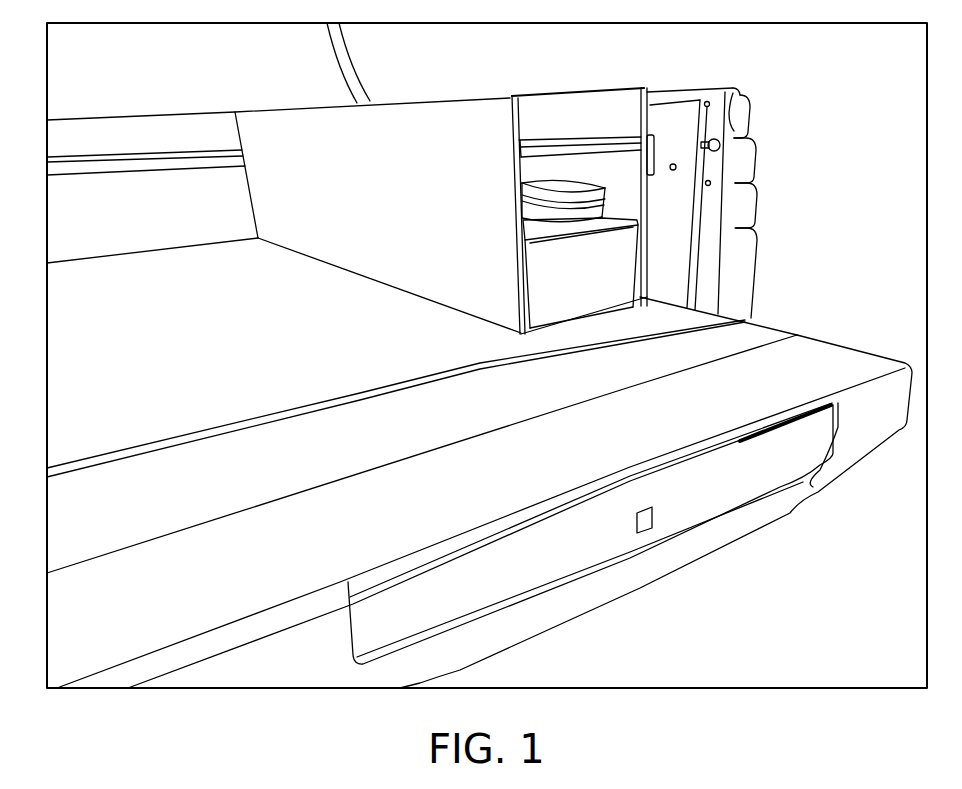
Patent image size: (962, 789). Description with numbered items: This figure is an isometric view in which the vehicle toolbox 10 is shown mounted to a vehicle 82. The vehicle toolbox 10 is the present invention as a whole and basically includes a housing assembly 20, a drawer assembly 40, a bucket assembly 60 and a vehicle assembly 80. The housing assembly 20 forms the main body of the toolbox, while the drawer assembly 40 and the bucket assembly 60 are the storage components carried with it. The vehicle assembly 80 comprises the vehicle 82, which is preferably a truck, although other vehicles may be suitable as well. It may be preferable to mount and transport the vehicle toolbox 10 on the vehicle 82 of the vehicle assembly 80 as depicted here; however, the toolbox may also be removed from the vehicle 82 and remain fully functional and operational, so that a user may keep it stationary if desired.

The vehicle toolbox 10 is at (623, 68).
The housing assembly 20 is at (238, 188).
The drawer assembly 40 is at (595, 292).
The bucket assembly 60 is at (530, 215).
The vehicle assembly 80 is at (372, 74).
The vehicle 82 is at (811, 362).